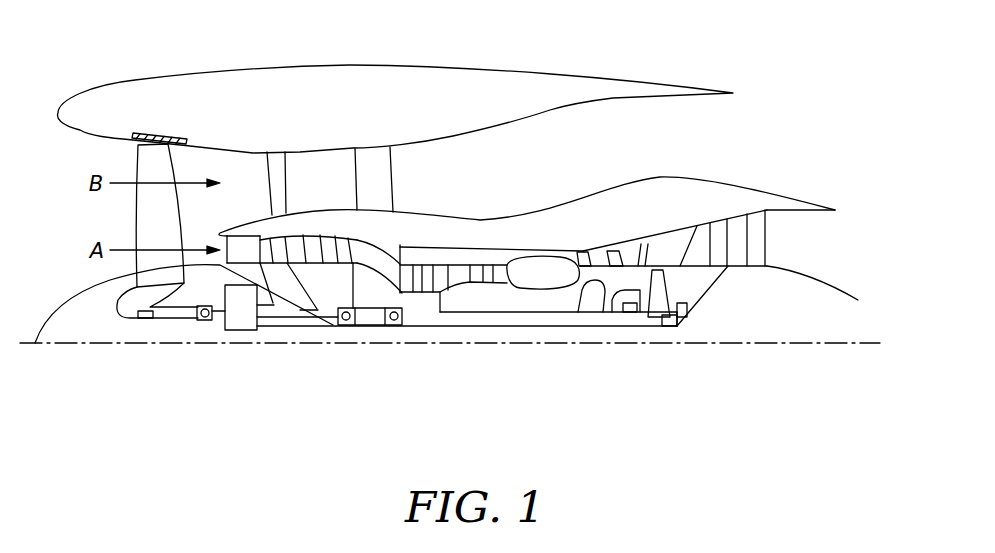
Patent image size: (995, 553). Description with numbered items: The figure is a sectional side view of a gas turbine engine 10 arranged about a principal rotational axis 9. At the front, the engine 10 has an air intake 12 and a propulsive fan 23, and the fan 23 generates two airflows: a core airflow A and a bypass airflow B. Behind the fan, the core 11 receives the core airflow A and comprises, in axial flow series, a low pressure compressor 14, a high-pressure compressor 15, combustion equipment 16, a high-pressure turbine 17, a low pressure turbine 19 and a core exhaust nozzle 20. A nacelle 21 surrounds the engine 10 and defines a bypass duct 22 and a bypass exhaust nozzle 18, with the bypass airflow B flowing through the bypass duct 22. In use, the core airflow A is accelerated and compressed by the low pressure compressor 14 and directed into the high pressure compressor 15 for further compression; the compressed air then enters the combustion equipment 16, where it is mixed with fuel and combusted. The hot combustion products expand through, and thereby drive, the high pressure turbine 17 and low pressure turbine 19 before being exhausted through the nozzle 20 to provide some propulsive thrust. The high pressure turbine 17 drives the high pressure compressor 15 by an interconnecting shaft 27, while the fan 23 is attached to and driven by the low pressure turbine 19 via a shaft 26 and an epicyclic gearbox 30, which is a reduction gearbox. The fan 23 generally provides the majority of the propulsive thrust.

The principal rotational axis 9 is at (775, 343).
The gas turbine engine 10 is at (137, 82).
The core 11 is at (507, 232).
The air intake 12 is at (117, 157).
The low pressure compressor 14 is at (308, 242).
The high-pressure compressor 15 is at (453, 275).
The combustion equipment 16 is at (533, 277).
The high-pressure turbine 17 is at (600, 262).
The bypass exhaust nozzle 18 is at (710, 134).
The low pressure turbine 19 is at (742, 255).
The core exhaust nozzle 20 is at (795, 242).
The nacelle 21 is at (327, 87).
The bypass duct 22 is at (640, 133).
The propulsive fan 23 is at (141, 217).
The shaft 26 is at (453, 328).
The interconnecting shaft 27 is at (493, 313).
The epicyclic gearbox 30 is at (238, 305).